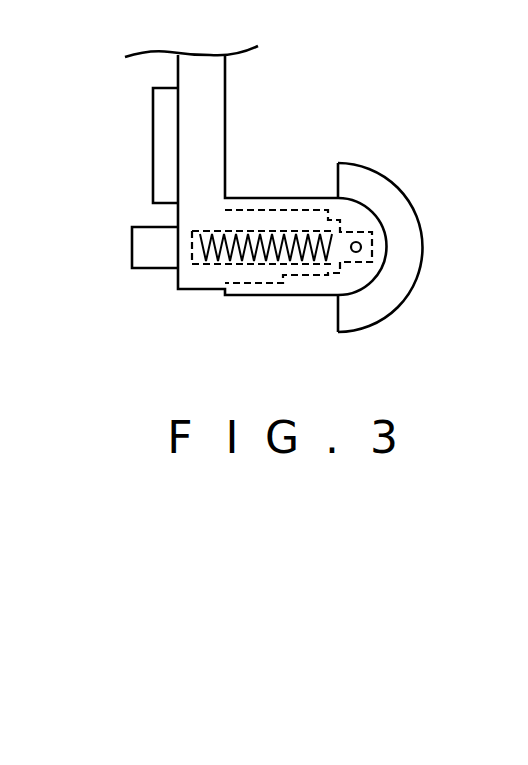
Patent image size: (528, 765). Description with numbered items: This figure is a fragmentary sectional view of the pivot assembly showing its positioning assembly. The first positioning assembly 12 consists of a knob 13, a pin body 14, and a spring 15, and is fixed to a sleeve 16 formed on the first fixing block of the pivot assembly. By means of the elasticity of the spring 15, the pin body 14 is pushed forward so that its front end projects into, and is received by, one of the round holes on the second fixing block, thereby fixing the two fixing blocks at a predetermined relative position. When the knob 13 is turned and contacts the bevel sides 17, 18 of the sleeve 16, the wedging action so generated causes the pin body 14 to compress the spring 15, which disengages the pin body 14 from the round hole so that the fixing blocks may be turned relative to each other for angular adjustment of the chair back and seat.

The first positioning assembly 12 is at (426, 172).
The knob 13 is at (370, 182).
The pin body 14 is at (143, 257).
The spring 15 is at (192, 266).
The sleeve 16 is at (263, 282).
The bevel side 17 is at (303, 273).
The bevel side 18 is at (285, 230).